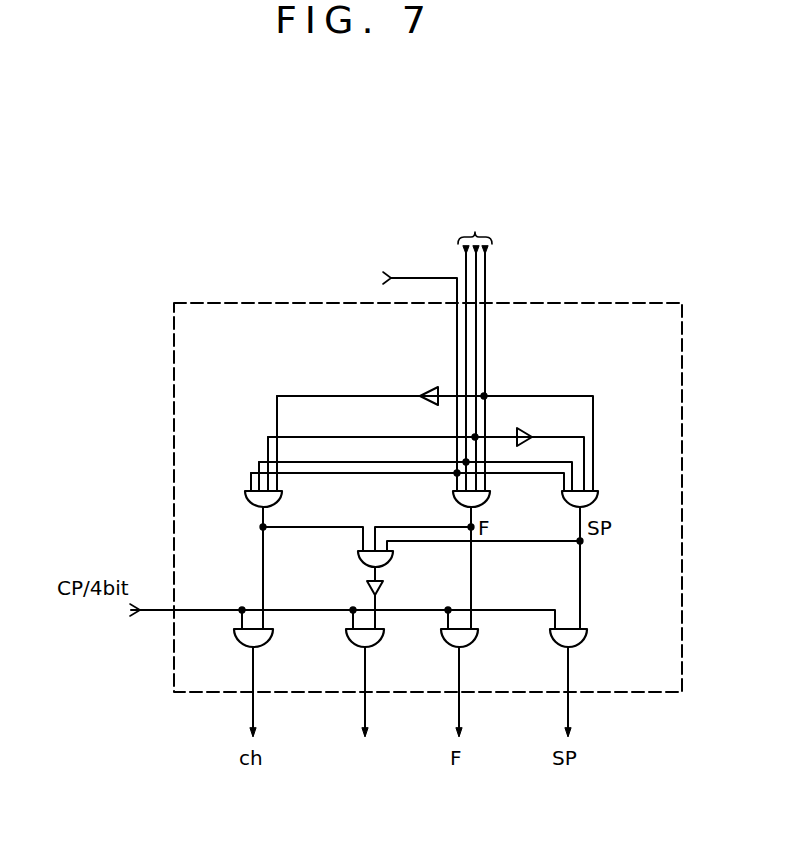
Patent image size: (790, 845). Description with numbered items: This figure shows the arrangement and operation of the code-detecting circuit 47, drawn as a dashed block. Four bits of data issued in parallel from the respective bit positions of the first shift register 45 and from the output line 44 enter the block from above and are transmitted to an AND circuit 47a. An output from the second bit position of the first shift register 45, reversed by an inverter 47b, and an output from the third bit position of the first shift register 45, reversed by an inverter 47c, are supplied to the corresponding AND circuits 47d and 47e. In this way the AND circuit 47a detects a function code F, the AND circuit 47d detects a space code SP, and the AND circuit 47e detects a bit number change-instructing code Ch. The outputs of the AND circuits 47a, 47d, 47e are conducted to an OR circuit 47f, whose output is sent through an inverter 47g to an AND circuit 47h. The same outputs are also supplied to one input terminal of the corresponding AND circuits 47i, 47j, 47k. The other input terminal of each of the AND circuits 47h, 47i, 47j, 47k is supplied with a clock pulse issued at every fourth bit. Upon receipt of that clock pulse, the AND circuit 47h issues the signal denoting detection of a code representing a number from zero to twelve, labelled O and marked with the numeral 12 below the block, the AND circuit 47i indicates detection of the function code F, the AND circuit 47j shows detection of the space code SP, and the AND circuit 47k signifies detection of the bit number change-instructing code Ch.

The code-detecting circuit 47 is at (645, 693).
The AND circuit 47a is at (493, 560).
The inverter 47b is at (520, 432).
The inverter 47c is at (433, 389).
The AND circuit 47d is at (592, 494).
The AND circuit 47e is at (250, 493).
The OR circuit 47f is at (393, 555).
The inverter 47g is at (384, 587).
The AND circuit 47h is at (375, 642).
The AND circuit 47i is at (470, 642).
The AND circuit 47j is at (579, 642).
The AND circuit 47k is at (263, 642).
The output signal O line 12 is at (363, 775).
The output line 44 is at (363, 378).
The first shift register 45 is at (465, 348).